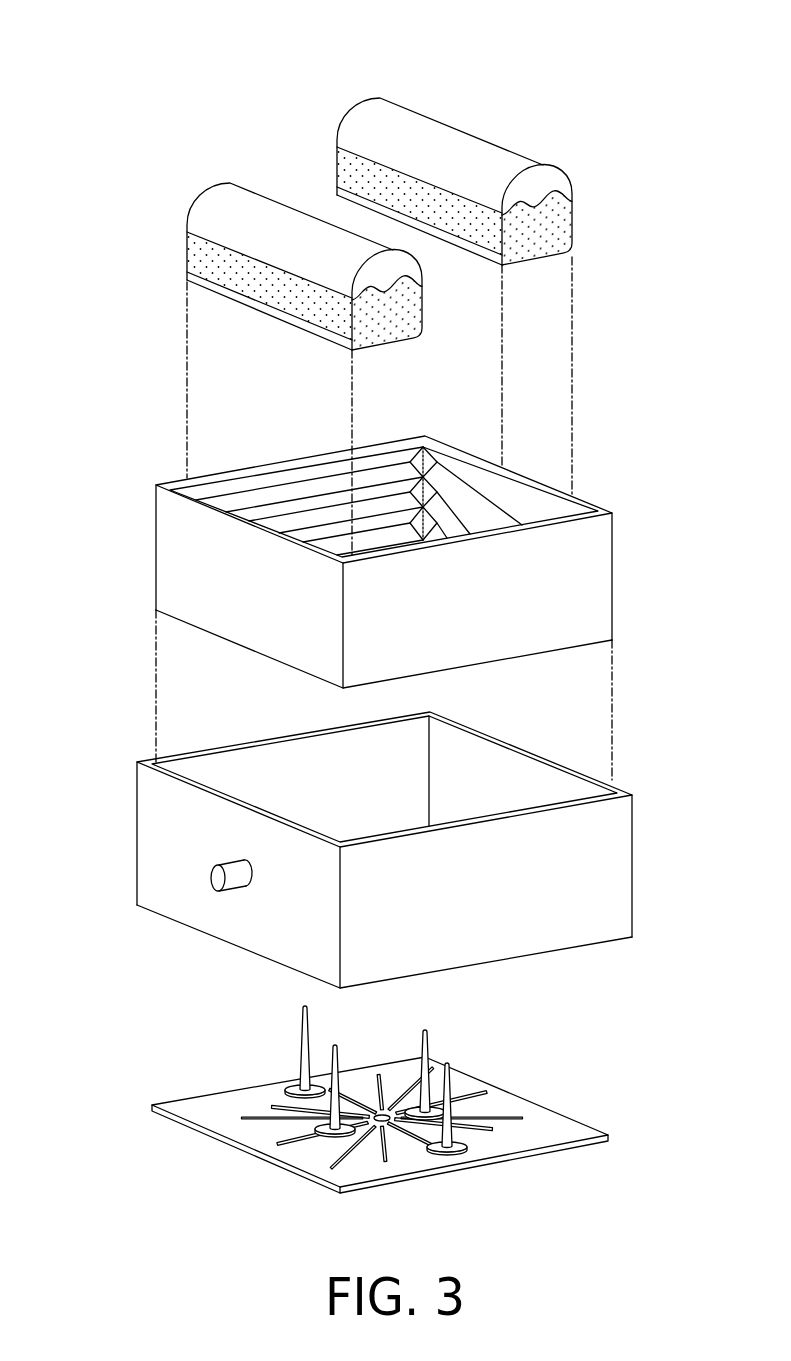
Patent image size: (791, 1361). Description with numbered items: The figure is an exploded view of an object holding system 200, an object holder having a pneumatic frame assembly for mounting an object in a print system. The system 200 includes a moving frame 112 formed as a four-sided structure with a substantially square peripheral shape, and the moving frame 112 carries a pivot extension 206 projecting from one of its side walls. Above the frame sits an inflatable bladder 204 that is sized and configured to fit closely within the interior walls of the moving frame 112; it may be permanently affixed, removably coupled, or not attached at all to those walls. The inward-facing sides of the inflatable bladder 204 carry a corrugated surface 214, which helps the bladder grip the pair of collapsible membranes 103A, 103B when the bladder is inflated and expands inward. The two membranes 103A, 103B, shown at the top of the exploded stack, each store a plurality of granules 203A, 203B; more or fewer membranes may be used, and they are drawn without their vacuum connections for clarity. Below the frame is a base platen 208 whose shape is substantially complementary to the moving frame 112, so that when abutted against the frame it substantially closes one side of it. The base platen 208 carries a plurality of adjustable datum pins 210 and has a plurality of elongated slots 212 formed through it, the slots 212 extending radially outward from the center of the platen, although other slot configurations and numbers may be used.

The object holding system 200 is at (130, 45).
The collapsible membrane 103A is at (200, 196).
The collapsible membrane 103B is at (353, 118).
The granules 203A is at (405, 316).
The granules 203B is at (578, 232).
The inflatable bladder 204 is at (588, 570).
The corrugated surface 214 is at (320, 497).
The moving frame 112 is at (613, 877).
The pivot extension 206 is at (213, 880).
The base platen 208 is at (163, 1118).
The adjustable datum pins 210 is at (303, 1040).
The elongated slots 212 is at (230, 1140).